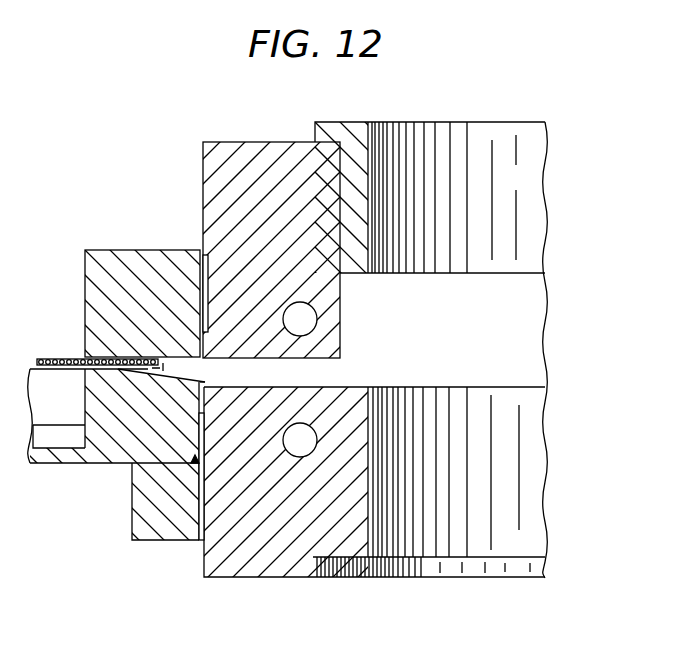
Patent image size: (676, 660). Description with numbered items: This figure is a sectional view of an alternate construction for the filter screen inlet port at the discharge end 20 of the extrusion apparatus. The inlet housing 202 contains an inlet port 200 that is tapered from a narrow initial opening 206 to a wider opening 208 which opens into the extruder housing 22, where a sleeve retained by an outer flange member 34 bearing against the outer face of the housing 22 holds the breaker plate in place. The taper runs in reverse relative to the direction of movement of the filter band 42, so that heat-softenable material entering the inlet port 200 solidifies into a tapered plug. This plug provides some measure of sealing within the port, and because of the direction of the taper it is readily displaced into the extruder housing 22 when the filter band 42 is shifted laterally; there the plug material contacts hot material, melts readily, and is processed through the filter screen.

The discharge end 20 is at (250, 142).
The housing 22 is at (230, 578).
The outer flange member 34 is at (355, 122).
The filter band 42 is at (45, 358).
The inlet port 200 is at (162, 380).
The inlet housing 202 is at (146, 250).
The narrow initial opening 206 is at (98, 372).
The wider opening 208 is at (205, 383).